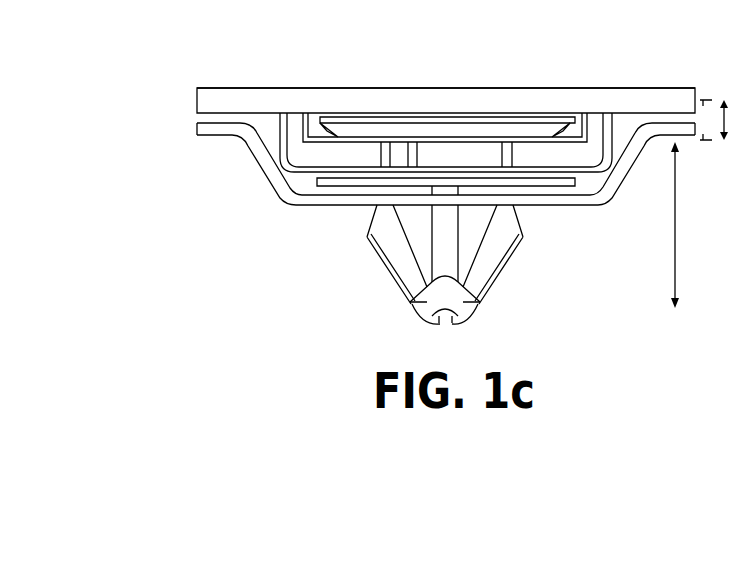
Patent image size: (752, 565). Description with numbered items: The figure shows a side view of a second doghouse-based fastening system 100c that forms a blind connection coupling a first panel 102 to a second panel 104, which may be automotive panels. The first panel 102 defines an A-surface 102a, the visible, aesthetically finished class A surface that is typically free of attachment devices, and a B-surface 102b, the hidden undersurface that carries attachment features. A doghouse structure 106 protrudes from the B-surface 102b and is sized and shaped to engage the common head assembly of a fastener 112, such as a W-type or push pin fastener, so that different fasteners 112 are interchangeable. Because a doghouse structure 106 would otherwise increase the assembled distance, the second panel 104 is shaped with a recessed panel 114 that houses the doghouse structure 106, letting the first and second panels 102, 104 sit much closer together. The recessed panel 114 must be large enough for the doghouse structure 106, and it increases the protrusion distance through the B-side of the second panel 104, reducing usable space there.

The second doghouse-based fastening system 100c is at (192, 49).
The first panel 102 is at (197, 99).
The A-surface 102a is at (229, 78).
The B-surface 102b is at (197, 124).
The second panel 104 is at (229, 137).
The doghouse structure 106 is at (292, 168).
The fastener 112 is at (493, 282).
The recessed panel 114 is at (580, 205).